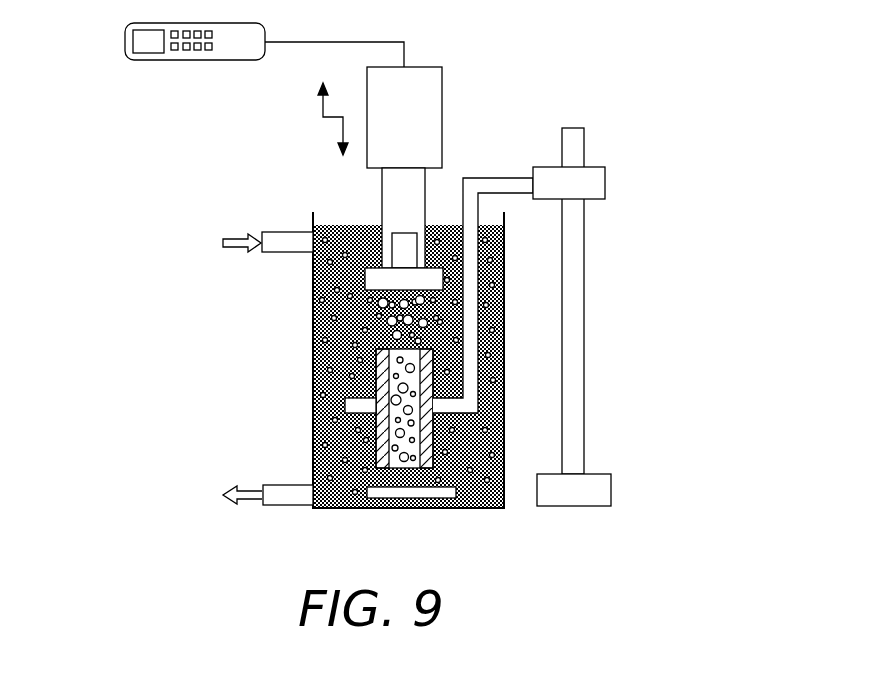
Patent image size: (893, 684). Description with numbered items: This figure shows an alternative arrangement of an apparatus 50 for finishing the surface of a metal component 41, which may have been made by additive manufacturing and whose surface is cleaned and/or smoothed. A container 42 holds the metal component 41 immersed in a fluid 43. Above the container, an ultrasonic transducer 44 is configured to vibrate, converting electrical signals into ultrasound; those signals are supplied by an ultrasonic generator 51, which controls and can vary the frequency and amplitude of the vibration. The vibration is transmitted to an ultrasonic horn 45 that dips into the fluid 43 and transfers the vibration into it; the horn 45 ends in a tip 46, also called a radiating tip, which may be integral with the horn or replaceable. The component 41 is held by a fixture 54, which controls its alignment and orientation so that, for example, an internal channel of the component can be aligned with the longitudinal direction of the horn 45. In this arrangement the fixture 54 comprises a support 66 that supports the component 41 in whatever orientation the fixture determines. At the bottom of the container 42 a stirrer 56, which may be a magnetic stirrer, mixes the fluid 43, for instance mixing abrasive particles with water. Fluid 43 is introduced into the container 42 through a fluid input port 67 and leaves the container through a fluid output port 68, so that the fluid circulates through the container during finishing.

The metal component 41 is at (368, 448).
The container 42 is at (313, 343).
The fluid 43 is at (332, 323).
The ultrasonic transducer 44 is at (442, 107).
The ultrasonic horn 45 is at (374, 190).
The tip 46 is at (357, 279).
The apparatus 50 is at (679, 75).
The ultrasonic generator 51 is at (118, 34).
The fixture 54 is at (590, 323).
The stirrer 56 is at (414, 498).
The support 66 is at (336, 405).
The fluid input port 67 is at (283, 232).
The fluid output port 68 is at (283, 505).